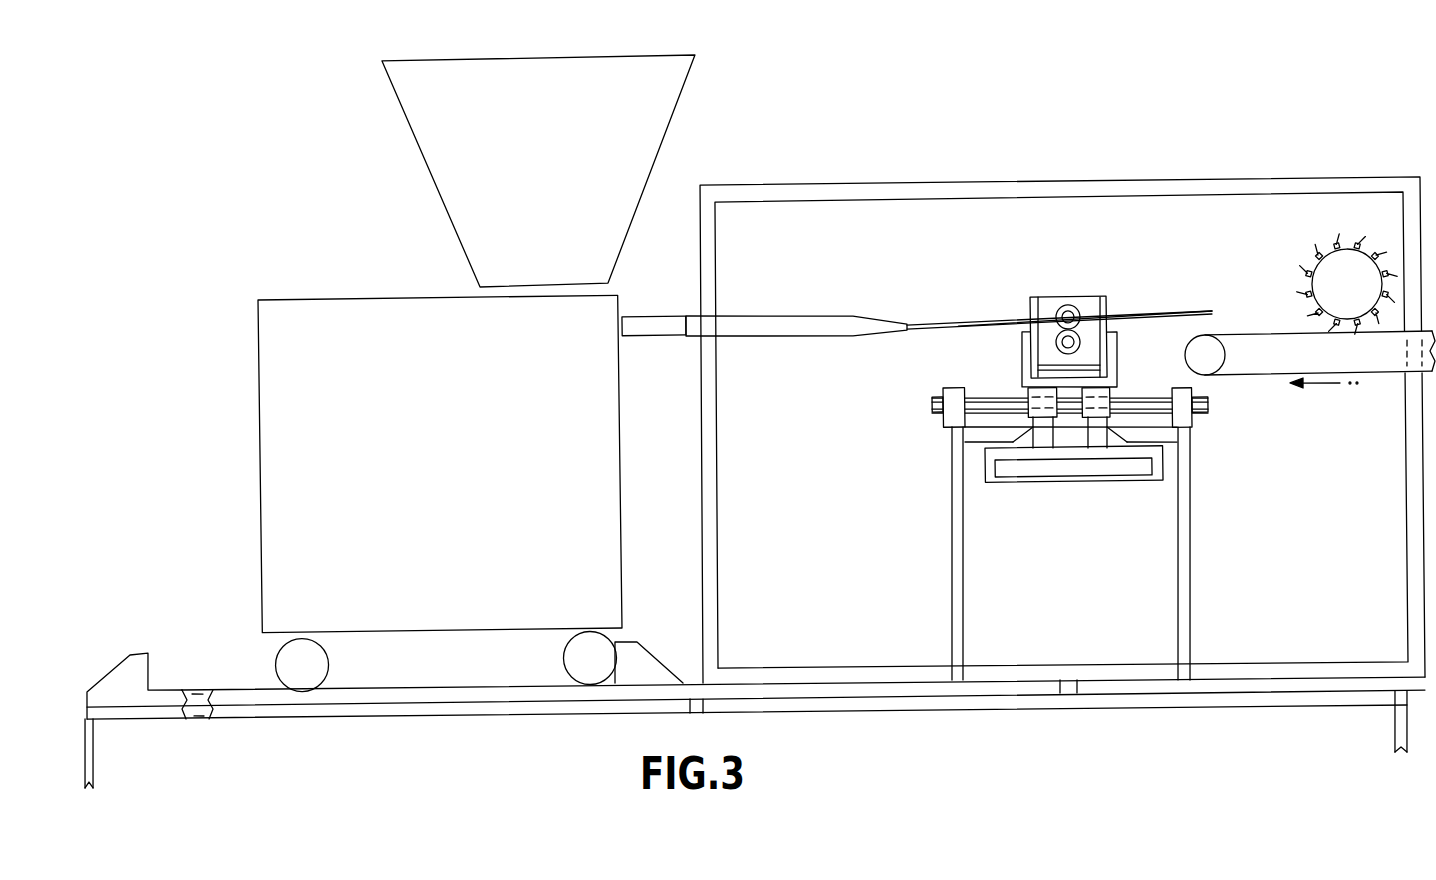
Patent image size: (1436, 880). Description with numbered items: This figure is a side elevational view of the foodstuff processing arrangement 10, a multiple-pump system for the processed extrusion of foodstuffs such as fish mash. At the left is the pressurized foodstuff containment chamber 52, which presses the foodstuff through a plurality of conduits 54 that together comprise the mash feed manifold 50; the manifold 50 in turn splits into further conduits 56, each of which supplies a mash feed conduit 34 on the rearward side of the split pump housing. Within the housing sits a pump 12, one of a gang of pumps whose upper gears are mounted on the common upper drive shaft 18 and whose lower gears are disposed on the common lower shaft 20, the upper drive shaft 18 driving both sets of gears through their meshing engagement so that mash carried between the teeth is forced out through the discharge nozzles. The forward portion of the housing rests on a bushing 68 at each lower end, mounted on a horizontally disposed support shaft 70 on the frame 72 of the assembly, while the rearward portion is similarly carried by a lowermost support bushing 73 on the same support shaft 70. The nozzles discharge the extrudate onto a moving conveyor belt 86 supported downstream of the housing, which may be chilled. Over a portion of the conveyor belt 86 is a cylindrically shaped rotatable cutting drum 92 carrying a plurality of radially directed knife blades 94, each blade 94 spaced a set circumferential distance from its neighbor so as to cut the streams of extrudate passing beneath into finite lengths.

The foodstuff processing arrangement 10 is at (1050, 460).
The pump 12 is at (1077, 296).
The upper drive shaft 18 is at (1084, 316).
The lower shaft 20 is at (1082, 346).
The mash feed conduit 34 is at (1018, 319).
The mash feed manifold 50 is at (894, 334).
The pressurized foodstuff containment chamber 52 is at (625, 514).
The conduits 54 is at (814, 316).
The further conduits 56 is at (924, 323).
The bushing 68 is at (1111, 403).
The support shaft 70 is at (1069, 388).
The frame 72 is at (951, 522).
The lowermost support bushing 73 is at (1028, 398).
The conveyor belt 86 is at (1236, 380).
The rotatable cutting drum 92 is at (1331, 273).
The knife blades 94 is at (1348, 256).